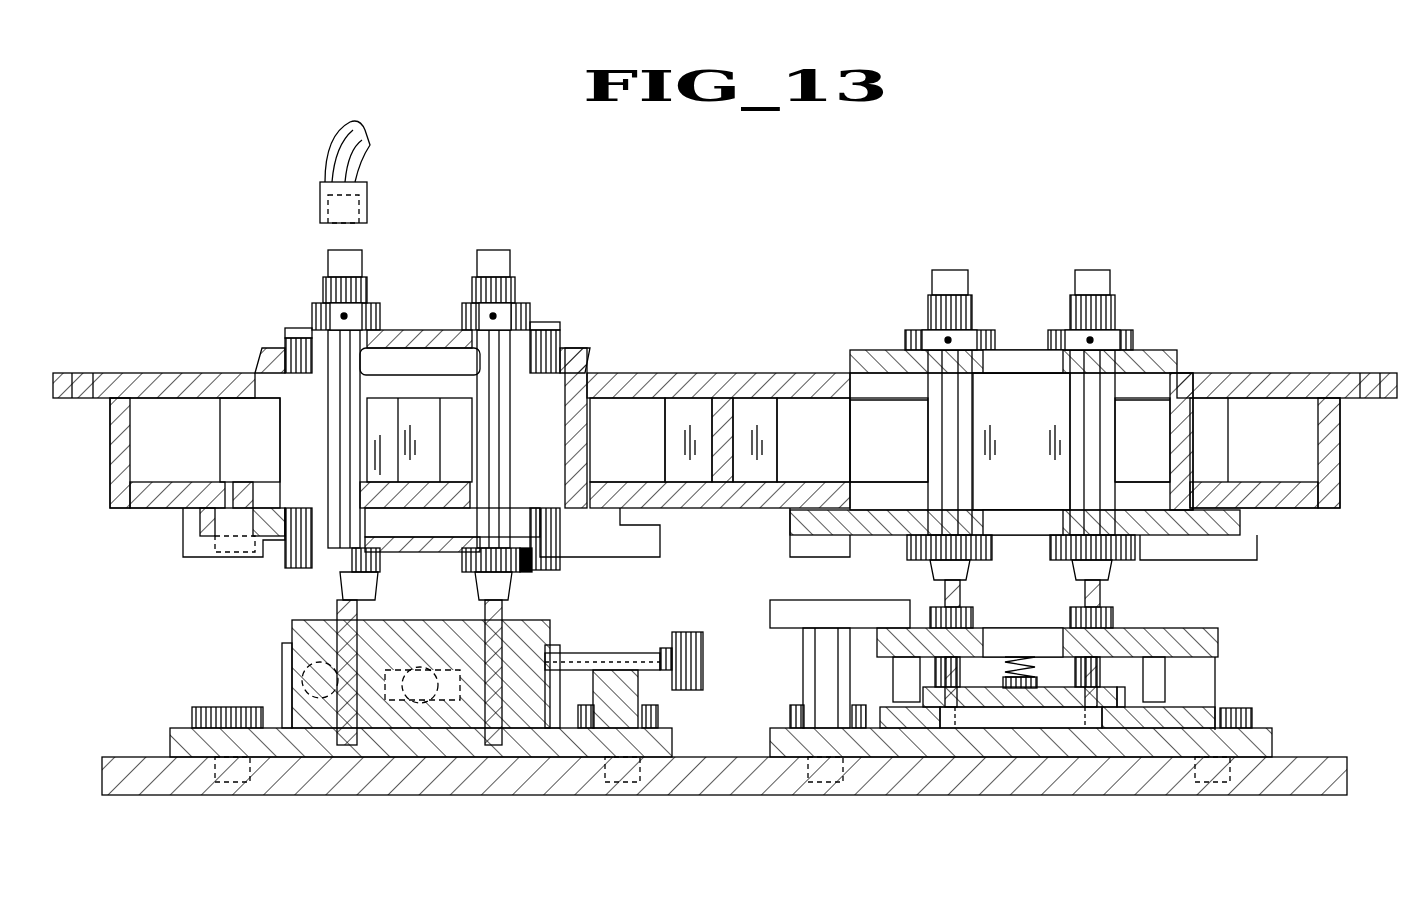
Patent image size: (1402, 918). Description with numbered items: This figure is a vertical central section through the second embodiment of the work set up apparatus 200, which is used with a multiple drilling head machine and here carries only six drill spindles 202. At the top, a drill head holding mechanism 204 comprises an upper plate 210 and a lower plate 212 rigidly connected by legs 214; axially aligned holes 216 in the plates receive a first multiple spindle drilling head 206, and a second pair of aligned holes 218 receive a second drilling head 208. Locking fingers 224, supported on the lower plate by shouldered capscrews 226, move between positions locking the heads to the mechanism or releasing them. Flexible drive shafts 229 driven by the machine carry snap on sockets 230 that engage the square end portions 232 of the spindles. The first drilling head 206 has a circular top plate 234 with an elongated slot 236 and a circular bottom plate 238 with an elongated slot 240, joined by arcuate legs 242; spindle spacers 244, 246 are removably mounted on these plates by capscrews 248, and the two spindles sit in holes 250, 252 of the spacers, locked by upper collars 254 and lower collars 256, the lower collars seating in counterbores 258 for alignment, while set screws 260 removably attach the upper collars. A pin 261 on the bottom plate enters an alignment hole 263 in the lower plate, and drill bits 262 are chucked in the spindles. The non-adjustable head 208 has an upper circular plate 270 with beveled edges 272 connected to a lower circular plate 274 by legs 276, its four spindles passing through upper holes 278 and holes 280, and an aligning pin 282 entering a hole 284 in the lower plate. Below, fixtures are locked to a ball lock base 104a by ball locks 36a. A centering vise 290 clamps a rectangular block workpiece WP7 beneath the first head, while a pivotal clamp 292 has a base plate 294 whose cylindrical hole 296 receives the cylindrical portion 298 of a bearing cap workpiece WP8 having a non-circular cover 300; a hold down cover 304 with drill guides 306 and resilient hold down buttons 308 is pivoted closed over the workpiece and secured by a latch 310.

The ball lock base 104a is at (172, 794).
The ball locks 36a is at (192, 707).
The work set up apparatus 200 is at (800, 258).
The drill spindles 202 is at (475, 292).
The drill head holding mechanism 204 is at (722, 372).
The first multiple spindle drilling head 206 is at (590, 350).
The second drilling head 208 is at (1180, 350).
The upper plate 210 is at (620, 375).
The lower plate 212 is at (1322, 508).
The legs 214 is at (110, 445).
The axially aligned holes 216 is at (258, 398).
The second pair of aligned holes 218 is at (855, 490).
The locking fingers 224 is at (183, 545).
The shouldered capscrews 226 is at (183, 560).
The flexible drive shafts 229 is at (328, 165).
The snap on sockets 230 is at (320, 195).
The square end portions 232 is at (477, 262).
The circular top plate 234 is at (255, 370).
The elongated slot 236 is at (285, 345).
The circular bottom plate 238 is at (200, 522).
The elongated slot 240 is at (340, 525).
The arcuate legs 242 is at (400, 438).
The spindle spacer 244 is at (590, 348).
The spindle spacer 246 is at (540, 565).
The capscrews 248 is at (285, 338).
The holes 250 is at (470, 360).
The holes 252 is at (462, 560).
The upper collars 254 is at (312, 310).
The lower collars 256 is at (378, 585).
The counterbores 258 is at (337, 585).
The set screws 260 is at (493, 316).
The pin 261 is at (220, 470).
The drill bits 262 is at (490, 650).
The alignment hole 263 is at (220, 490).
The upper circular plate 270 is at (860, 352).
The beveled edges 272 is at (855, 362).
The lower circular plate 274 is at (1245, 560).
The legs 276 is at (1045, 434).
The upper holes 278 is at (1070, 390).
The holes 280 is at (1070, 490).
The aligning pin 282 is at (830, 558).
The hole 284 is at (813, 440).
The centering vise 290 is at (282, 652).
The pivotal clamp 292 is at (1225, 648).
The base plate 294 is at (1200, 705).
The cylindrical hole 296 is at (1085, 728).
The cylindrical portion 298 is at (950, 707).
The non-circular cover 300 is at (1050, 680).
The hold down cover 304 is at (1200, 628).
The drill guides 306 is at (1070, 616).
The resilient hold down buttons 308 is at (1020, 690).
The latch 310 is at (770, 610).
The workpiece WP7 is at (282, 660).
The workpiece WP8 is at (1120, 690).